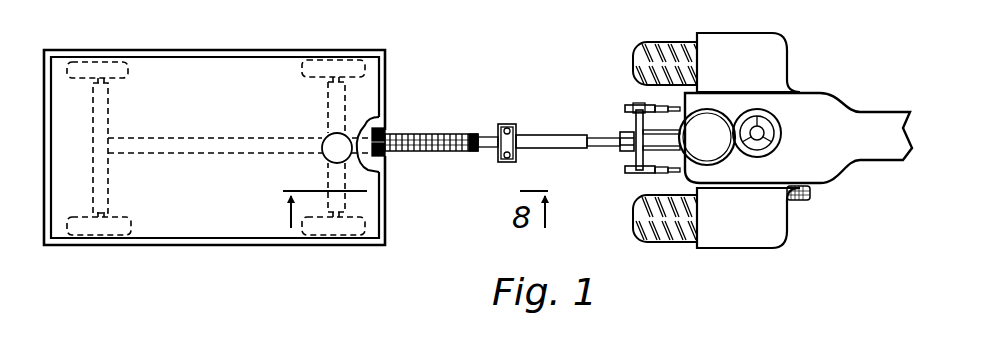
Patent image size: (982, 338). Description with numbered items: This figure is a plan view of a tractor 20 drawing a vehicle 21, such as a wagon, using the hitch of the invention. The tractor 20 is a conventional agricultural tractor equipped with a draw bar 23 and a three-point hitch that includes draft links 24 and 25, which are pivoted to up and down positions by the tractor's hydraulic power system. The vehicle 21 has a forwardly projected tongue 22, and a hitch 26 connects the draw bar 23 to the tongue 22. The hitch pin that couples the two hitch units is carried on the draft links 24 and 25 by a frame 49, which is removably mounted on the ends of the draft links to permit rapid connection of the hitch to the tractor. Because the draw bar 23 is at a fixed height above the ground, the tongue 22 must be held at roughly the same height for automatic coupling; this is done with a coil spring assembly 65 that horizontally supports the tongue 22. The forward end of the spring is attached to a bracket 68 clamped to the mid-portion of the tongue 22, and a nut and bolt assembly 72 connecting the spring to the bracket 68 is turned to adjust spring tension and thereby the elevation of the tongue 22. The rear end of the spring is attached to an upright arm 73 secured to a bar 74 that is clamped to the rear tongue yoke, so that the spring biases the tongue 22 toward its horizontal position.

The tractor 20 is at (842, 102).
The vehicle 21 is at (246, 49).
The tongue 22 is at (540, 134).
The draw bar 23 is at (624, 132).
The draft link 24 is at (679, 106).
The draft link 25 is at (672, 177).
The hitch 26 is at (617, 154).
The frame 49 is at (631, 120).
The coil spring assembly 65 is at (446, 128).
The bracket 68 is at (499, 159).
The nut and bolt assembly 72 is at (494, 130).
The upright arm 73 is at (386, 154).
The bar 74 is at (386, 129).